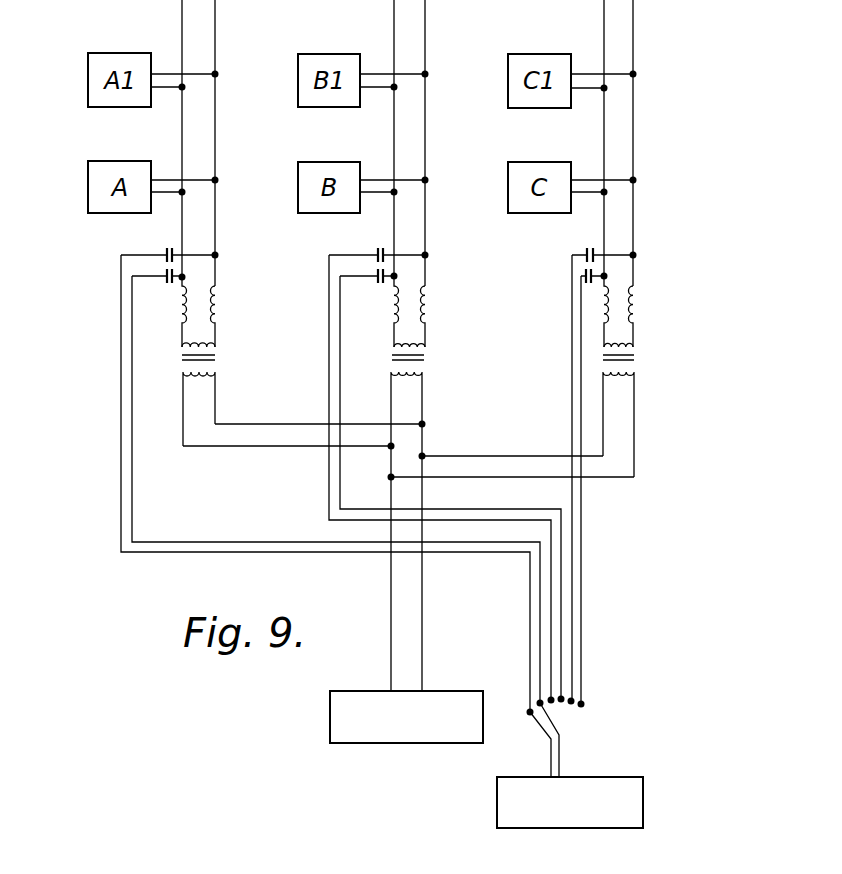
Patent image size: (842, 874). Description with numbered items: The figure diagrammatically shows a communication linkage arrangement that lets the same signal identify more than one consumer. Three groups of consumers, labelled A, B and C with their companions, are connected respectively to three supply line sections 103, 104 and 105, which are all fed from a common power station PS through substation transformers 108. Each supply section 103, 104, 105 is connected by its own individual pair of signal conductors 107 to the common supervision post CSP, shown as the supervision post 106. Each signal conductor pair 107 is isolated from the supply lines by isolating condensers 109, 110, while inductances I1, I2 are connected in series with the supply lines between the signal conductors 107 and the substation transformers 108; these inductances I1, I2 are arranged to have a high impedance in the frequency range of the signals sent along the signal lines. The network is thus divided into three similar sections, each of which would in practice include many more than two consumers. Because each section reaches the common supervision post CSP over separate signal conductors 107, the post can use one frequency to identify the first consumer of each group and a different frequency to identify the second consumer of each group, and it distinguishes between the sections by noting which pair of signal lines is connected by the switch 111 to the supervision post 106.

The supply line section 103 is at (182, 222).
The supply line section 104 is at (394, 212).
The supply line section 105 is at (604, 212).
The supervision post 106 is at (497, 812).
The signal conductors 107 is at (264, 556).
The substation transformers 108 is at (218, 356).
The isolating condenser 109 is at (165, 251).
The isolating condenser 110 is at (168, 281).
The switch 111 is at (558, 732).
The inductance I1 is at (178, 312).
The inductance I2 is at (220, 291).
The power station PS is at (330, 713).
The common supervision post CSP is at (570, 828).